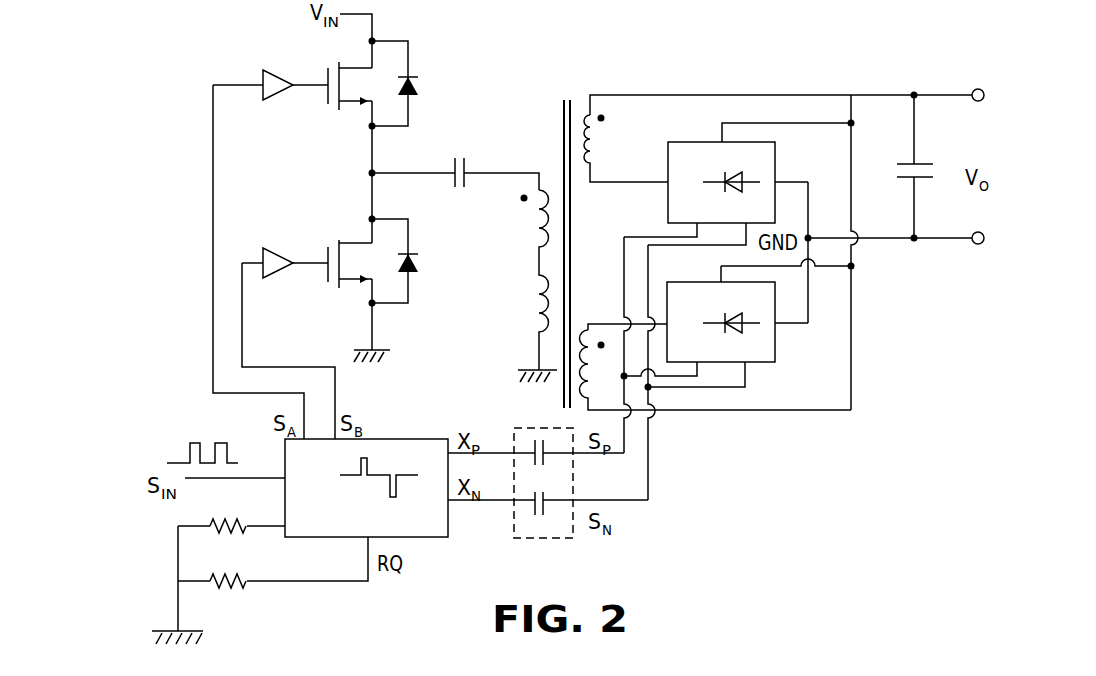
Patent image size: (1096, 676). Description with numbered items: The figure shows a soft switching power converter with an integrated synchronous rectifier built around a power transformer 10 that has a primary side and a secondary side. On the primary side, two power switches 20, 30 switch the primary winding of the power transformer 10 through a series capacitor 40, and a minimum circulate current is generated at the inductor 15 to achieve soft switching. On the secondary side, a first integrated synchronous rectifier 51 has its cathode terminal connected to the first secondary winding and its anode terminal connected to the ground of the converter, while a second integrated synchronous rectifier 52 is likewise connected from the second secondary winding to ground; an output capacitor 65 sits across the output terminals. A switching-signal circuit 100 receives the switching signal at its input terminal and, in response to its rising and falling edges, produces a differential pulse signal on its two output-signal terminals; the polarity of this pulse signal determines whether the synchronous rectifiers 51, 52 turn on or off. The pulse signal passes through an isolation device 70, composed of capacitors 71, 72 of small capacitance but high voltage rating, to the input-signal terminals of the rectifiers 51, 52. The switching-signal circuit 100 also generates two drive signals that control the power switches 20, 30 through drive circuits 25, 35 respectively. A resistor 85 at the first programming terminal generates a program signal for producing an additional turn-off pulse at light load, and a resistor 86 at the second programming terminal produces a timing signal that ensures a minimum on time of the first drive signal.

The power transformer 10 is at (739, 227).
The inductor 15 is at (532, 286).
The power switch 20 is at (392, 52).
The drive circuit 25 is at (276, 94).
The power switch 30 is at (392, 233).
The drive circuit 35 is at (276, 272).
The resonant capacitor 40 is at (454, 158).
The first integrated synchronous rectifier 51 is at (777, 162).
The second integrated synchronous rectifier 52 is at (765, 345).
The output capacitor 65 is at (922, 166).
The isolation device 70 is at (526, 452).
The capacitor 71 is at (552, 462).
The capacitor 72 is at (552, 514).
The resistor 85 is at (228, 545).
The resistor 86 is at (228, 599).
The switching-signal circuit 100 is at (413, 457).